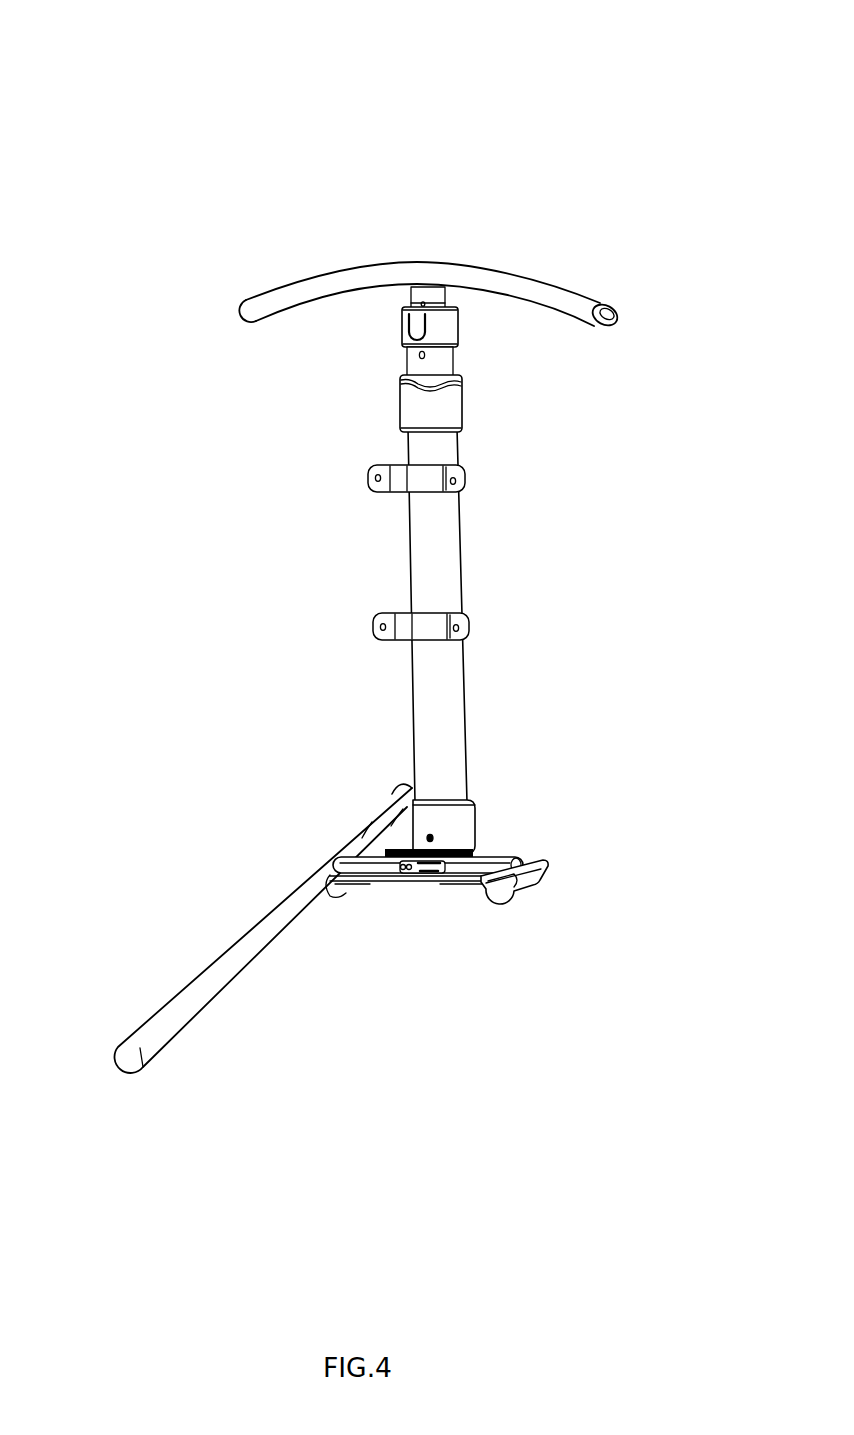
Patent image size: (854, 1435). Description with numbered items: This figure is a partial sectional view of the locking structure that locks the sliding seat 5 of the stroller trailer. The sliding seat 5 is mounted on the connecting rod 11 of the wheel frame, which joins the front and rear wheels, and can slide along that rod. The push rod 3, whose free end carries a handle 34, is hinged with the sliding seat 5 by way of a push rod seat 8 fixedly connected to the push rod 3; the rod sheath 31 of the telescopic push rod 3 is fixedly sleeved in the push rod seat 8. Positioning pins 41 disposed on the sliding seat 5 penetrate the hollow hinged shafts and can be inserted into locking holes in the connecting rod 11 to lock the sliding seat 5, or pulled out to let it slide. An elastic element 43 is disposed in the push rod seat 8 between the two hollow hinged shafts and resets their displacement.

The push rod 3 is at (264, 544).
The rod sheath 31 is at (430, 575).
The handle 34 is at (490, 280).
The push rod seat 8 is at (458, 827).
The positioning pin 41 is at (355, 863).
The elastic element 43 is at (430, 868).
The connecting rod 11 is at (252, 937).
The sliding seat 5 is at (500, 893).